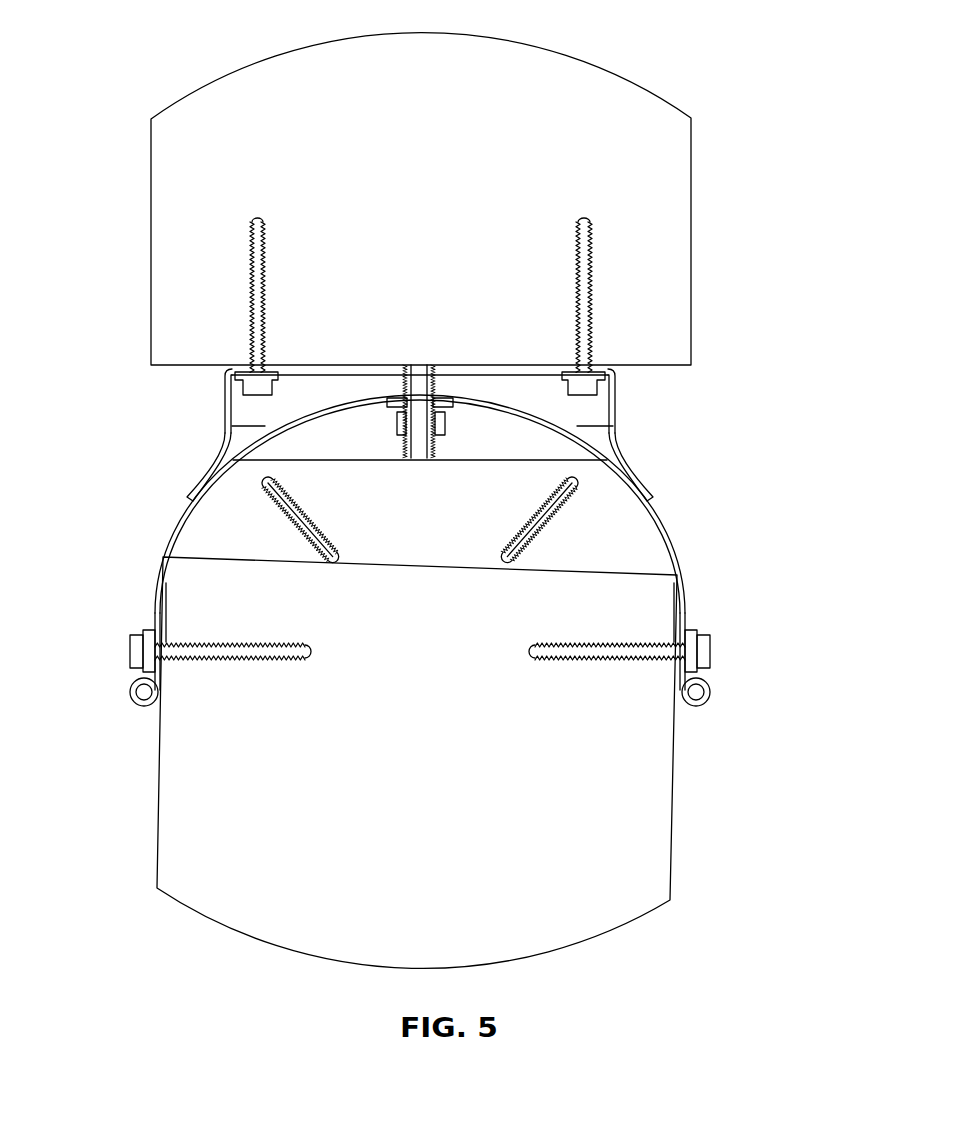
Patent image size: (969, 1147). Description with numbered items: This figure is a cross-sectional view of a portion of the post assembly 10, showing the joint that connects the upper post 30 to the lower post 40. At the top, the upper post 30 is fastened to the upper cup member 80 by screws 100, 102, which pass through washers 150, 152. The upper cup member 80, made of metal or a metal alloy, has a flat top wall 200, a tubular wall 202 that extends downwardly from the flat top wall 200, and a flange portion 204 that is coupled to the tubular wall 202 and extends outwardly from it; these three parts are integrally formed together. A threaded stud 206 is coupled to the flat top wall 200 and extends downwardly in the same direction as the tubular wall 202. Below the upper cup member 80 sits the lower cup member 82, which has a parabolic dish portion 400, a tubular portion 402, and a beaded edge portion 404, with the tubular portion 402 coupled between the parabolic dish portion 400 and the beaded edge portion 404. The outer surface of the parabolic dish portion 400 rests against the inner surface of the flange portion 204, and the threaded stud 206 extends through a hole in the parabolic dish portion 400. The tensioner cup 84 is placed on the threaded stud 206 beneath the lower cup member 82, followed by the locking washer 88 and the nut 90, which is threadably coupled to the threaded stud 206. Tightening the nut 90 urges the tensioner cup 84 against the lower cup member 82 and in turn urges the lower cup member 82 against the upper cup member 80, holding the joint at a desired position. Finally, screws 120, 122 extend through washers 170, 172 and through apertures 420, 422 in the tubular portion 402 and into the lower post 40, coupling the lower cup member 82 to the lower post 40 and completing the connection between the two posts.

The post assembly 10 is at (715, 110).
The upper post 30 is at (691, 240).
The lower post 40 is at (677, 860).
The upper cup member 80 is at (622, 405).
The lower cup member 82 is at (675, 530).
The tensioner cup 84 is at (392, 396).
The locking washer 88 is at (448, 402).
The nut 90 is at (397, 413).
The screw 100 is at (247, 258).
The screw 102 is at (594, 285).
The screw 120 is at (228, 660).
The screw 122 is at (640, 658).
The washer 150 is at (223, 363).
The washer 152 is at (612, 367).
The washer 170 is at (151, 636).
The washer 172 is at (697, 632).
The flat top wall 200 is at (518, 362).
The tubular wall 202 is at (225, 412).
The flange portion 204 is at (193, 483).
The threaded stud 206 is at (422, 443).
The parabolic dish portion 400 is at (667, 513).
The tubular portion 402 is at (688, 605).
The beaded edge portion 404 is at (707, 703).
The aperture 420 is at (165, 640).
The aperture 422 is at (682, 640).